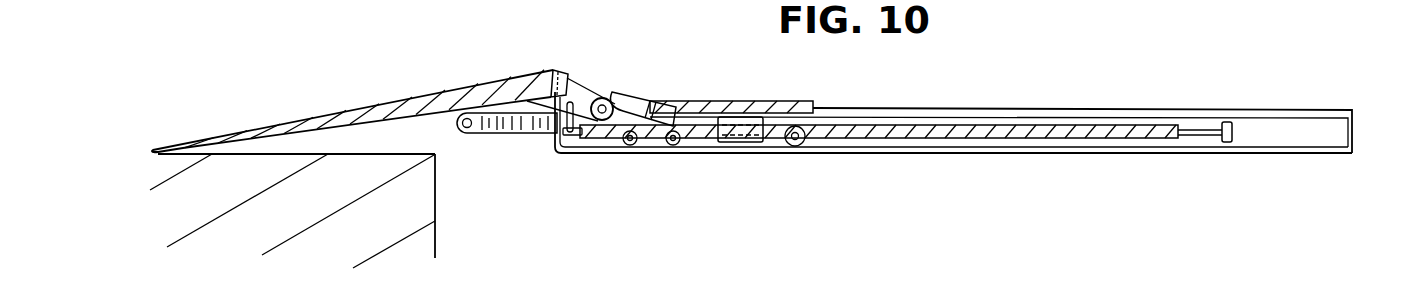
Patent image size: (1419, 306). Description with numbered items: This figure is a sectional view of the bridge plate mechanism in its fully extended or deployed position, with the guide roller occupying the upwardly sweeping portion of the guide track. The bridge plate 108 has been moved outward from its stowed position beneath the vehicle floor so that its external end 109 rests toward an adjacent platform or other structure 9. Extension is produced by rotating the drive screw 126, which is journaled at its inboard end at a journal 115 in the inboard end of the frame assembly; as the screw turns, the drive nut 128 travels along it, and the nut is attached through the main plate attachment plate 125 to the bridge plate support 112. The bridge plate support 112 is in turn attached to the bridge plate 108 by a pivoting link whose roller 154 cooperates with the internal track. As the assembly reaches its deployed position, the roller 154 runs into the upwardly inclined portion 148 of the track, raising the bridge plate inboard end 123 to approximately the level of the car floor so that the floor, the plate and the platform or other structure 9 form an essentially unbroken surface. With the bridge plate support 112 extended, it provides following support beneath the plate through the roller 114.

The platform or other structure 9 is at (221, 194).
The bridge plate 108 is at (318, 115).
The external end 109 is at (151, 148).
The bridge plate support 112 is at (538, 136).
The roller 114 is at (473, 134).
The journal 115 is at (1212, 109).
The bridge plate inboard end 123 is at (569, 76).
The main plate attachment plate 125 is at (743, 100).
The drive screw 126 is at (1112, 138).
The drive nut 128 is at (725, 143).
The upwardly inclined portion 148 is at (630, 97).
The roller 154 is at (588, 97).